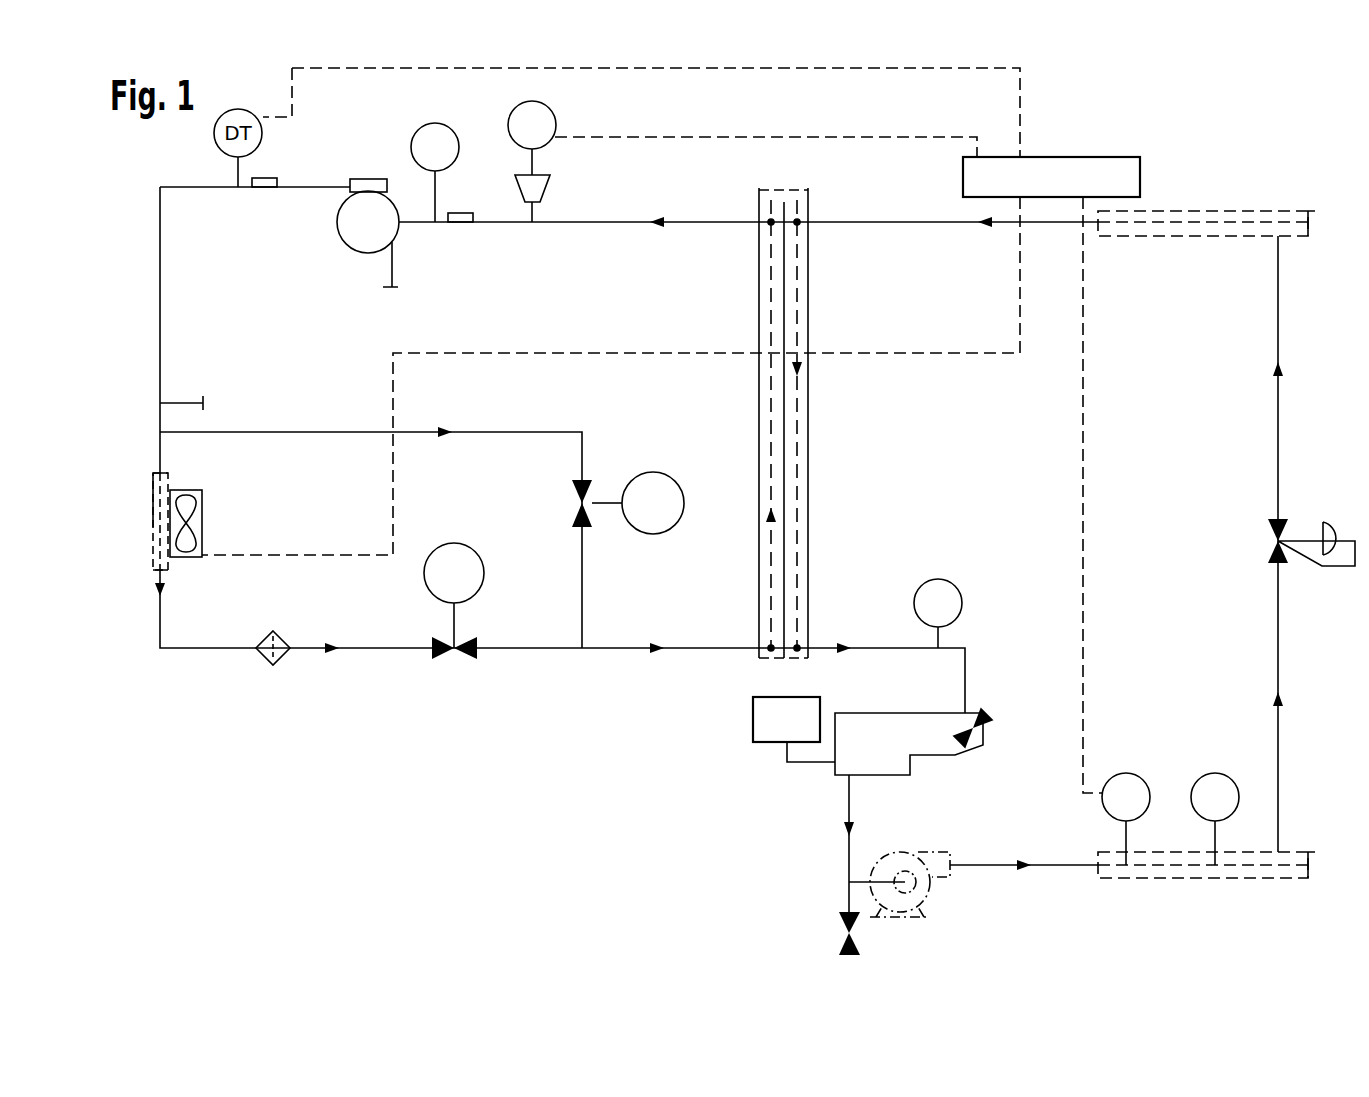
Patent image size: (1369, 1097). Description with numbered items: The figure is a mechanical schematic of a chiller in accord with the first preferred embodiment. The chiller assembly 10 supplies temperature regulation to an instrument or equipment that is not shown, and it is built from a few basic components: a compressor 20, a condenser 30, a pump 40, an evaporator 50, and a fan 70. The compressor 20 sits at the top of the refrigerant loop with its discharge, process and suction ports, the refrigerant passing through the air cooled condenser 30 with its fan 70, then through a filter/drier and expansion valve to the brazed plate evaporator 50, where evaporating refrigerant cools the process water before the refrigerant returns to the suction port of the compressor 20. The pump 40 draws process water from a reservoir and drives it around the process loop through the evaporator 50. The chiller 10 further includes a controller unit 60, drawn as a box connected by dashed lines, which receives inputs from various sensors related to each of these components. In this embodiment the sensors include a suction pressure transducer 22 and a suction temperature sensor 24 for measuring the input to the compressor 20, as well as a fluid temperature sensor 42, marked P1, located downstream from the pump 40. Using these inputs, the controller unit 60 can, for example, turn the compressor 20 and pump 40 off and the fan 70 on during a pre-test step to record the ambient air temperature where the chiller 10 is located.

The chiller assembly 10 is at (476, 766).
The compressor 20 is at (392, 206).
The suction pressure transducer 22 is at (532, 101).
The suction temperature sensor 24 is at (412, 148).
The condenser 30 is at (202, 492).
The pump 40 is at (910, 852).
The fluid temperature sensor (P1) 42 is at (1102, 810).
The evaporator 50 is at (808, 207).
The controller unit 60 is at (1105, 157).
The fan 70 is at (190, 557).